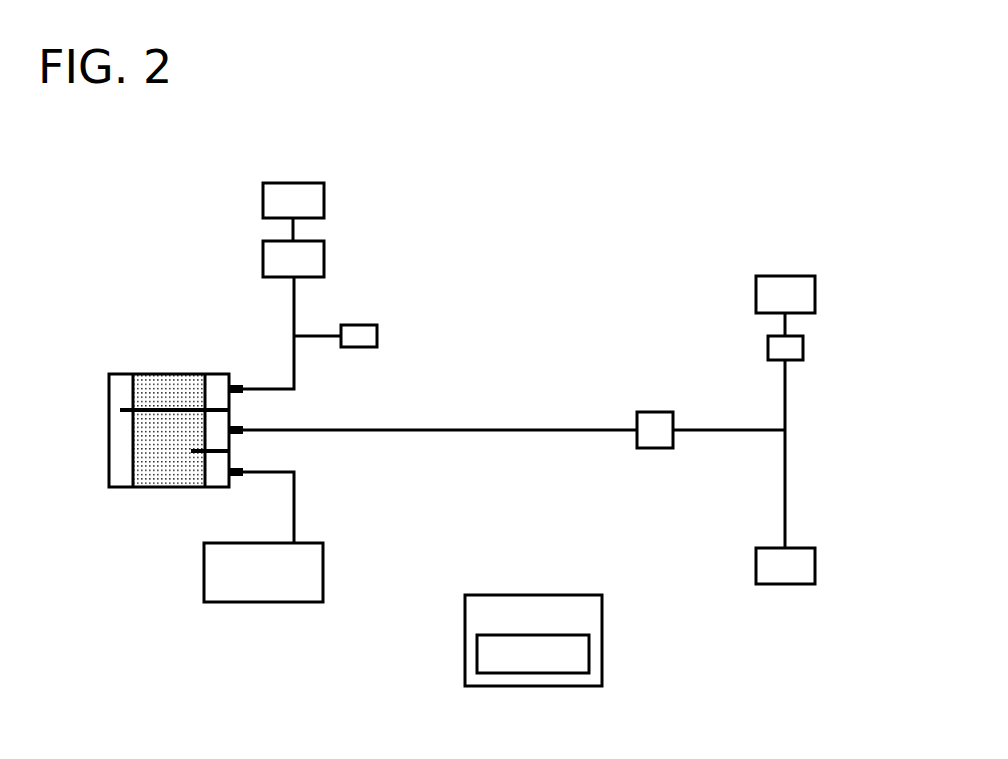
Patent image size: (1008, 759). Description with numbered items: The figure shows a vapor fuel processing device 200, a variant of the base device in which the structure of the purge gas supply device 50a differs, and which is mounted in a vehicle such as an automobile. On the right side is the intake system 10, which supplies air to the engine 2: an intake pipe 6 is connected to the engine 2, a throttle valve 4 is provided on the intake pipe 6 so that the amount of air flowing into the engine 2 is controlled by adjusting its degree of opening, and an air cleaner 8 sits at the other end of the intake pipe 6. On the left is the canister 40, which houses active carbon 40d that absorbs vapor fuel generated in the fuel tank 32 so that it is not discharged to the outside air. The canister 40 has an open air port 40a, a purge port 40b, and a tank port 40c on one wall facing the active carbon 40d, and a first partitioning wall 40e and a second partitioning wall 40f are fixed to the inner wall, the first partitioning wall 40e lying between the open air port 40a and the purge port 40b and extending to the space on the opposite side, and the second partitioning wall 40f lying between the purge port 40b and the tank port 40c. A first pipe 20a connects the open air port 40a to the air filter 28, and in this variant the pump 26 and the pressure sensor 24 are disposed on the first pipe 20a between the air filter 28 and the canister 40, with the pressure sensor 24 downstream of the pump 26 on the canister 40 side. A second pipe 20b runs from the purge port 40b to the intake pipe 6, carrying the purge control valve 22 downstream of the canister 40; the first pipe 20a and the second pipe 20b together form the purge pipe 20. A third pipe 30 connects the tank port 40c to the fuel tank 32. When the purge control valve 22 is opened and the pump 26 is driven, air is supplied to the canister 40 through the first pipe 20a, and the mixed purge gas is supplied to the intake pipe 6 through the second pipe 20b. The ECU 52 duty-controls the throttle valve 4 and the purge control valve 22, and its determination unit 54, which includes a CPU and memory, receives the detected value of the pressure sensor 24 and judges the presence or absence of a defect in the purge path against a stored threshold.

The engine 2 is at (815, 293).
The throttle valve 4 is at (803, 347).
The intake pipe 6 is at (785, 408).
The air cleaner 8 is at (815, 566).
The intake system 10 is at (735, 517).
The purge pipe 20 is at (514, 395).
The first pipe 20a is at (293, 312).
The second pipe 20b is at (382, 430).
The purge control valve 22 is at (655, 448).
The pressure sensor 24 is at (377, 336).
The pump 26 is at (324, 258).
The air filter 28 is at (324, 199).
The third pipe 30 is at (294, 520).
The fuel tank 32 is at (323, 578).
The canister 40 is at (209, 437).
The open air port 40a is at (233, 377).
The purge port 40b is at (243, 427).
The tank port 40c is at (232, 475).
The active carbon 40d is at (147, 473).
The first partitioning wall 40e is at (128, 407).
The second partitioning wall 40f is at (198, 463).
The purge gas supply device 50a is at (602, 292).
The ECU 52 is at (602, 628).
The determination unit 54 is at (589, 652).
The vapor fuel processing device 200 is at (730, 208).